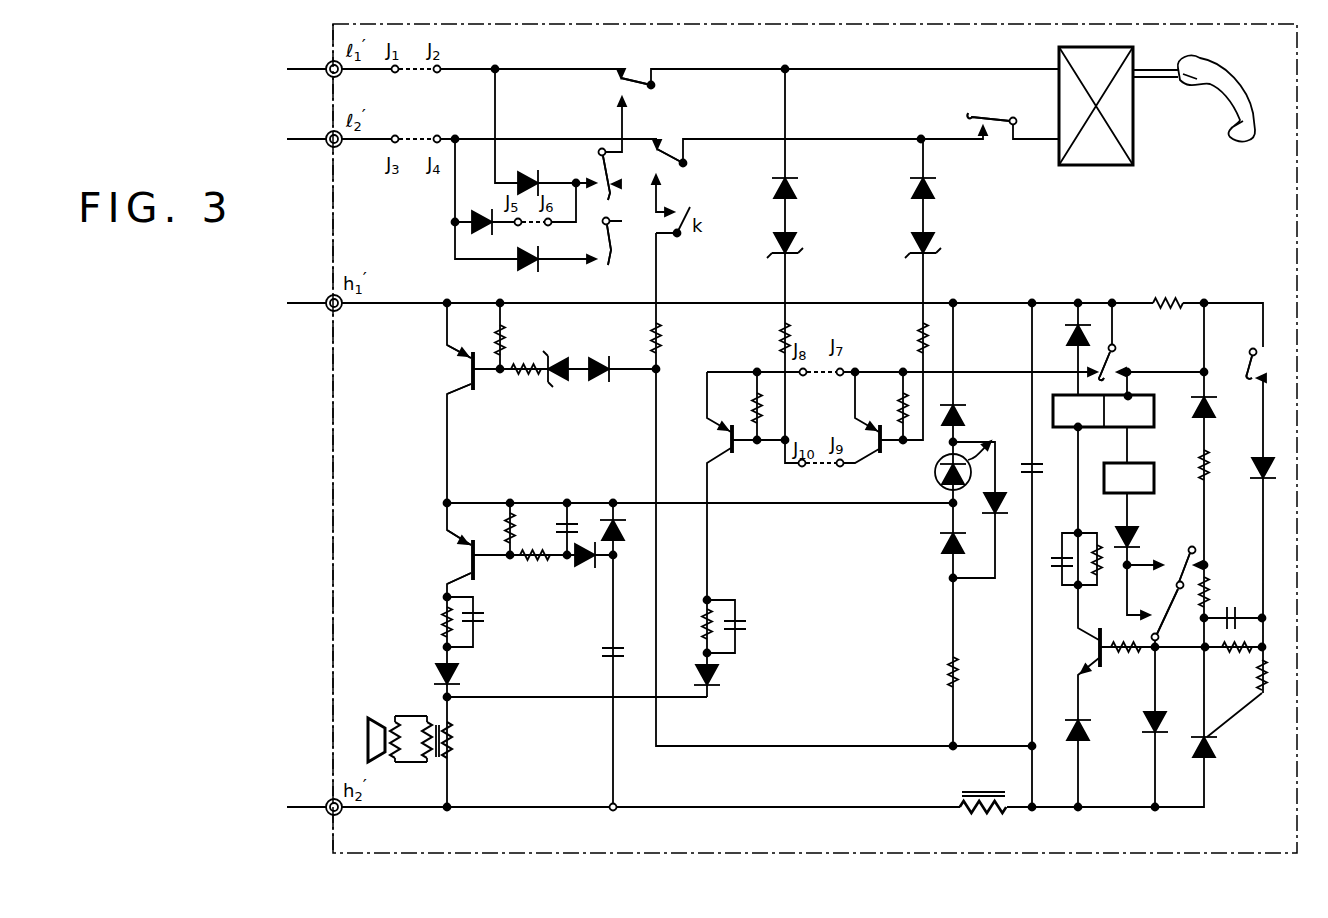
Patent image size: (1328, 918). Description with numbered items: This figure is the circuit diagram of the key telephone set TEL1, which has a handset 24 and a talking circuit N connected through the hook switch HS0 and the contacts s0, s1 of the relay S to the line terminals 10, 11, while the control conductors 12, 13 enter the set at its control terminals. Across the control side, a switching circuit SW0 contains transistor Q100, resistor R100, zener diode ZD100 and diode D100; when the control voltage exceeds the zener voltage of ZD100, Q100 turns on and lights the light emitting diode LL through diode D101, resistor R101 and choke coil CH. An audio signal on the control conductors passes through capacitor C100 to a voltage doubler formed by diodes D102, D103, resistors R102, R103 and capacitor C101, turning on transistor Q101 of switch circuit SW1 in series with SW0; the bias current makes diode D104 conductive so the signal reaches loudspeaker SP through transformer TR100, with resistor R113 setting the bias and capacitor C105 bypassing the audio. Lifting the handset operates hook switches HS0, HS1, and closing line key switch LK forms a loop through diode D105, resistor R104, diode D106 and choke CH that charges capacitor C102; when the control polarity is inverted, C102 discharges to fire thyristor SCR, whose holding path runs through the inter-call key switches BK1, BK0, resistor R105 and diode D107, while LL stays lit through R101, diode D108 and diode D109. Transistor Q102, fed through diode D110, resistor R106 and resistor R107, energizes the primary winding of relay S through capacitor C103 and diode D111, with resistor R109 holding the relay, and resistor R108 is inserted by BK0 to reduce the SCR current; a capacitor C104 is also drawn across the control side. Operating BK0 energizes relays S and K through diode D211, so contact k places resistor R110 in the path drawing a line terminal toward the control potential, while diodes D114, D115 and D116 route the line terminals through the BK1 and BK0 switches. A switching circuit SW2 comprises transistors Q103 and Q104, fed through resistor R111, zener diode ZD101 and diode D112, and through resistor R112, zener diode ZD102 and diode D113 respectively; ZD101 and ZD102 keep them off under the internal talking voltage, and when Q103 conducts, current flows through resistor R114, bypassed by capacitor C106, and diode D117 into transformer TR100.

The line terminal l1' 10 is at (316, 72).
The line terminal l2' 11 is at (316, 142).
The control conductor 12 is at (314, 307).
The control conductor 13 is at (315, 804).
The handset 24 is at (1196, 91).
The talking circuit N is at (1108, 106).
The contact of relay S s0 is at (635, 58).
The contact of relay S s1 is at (670, 139).
The hook switch HS0 is at (992, 104).
The hook switch HS1 is at (1126, 350).
The inter-call key switch BK0 is at (1180, 549).
The inter-call key switch BK1 is at (1155, 607).
The line key switch LK is at (1266, 366).
The relay K is at (1140, 479).
The relay S is at (1103, 399).
The light emitting diode LL is at (952, 464).
The thyristor SCR is at (1226, 751).
The loudspeaker SP is at (379, 723).
The transformer TR100 is at (454, 739).
The choke coil CH is at (983, 790).
The key telephone set TEL1 is at (333, 508).
The switching circuit SW0 is at (437, 385).
The switch circuit SW1 is at (437, 565).
The switching circuit SW2 is at (852, 495).
The transistor Q100 is at (500, 376).
The transistor Q101 is at (500, 563).
The transistor Q102 is at (1070, 647).
The transistor Q103 is at (698, 440).
The transistor Q104 is at (880, 423).
The resistor R100 is at (526, 340).
The resistor R101 is at (981, 672).
The resistor R102 is at (539, 544).
The resistor R103 is at (488, 524).
The resistor R104 is at (1240, 666).
The resistor R105 is at (1226, 465).
The resistor R106 is at (1129, 661).
The resistor R107 is at (1169, 291).
The resistor R108 is at (1227, 579).
The resistor R109 is at (1104, 544).
The resistor R110 is at (681, 338).
The resistor R111 is at (759, 338).
The resistor R112 is at (896, 336).
The resistor R113 is at (424, 622).
The resistor R114 is at (684, 624).
The capacitor C100 is at (588, 650).
The capacitor C101 is at (557, 520).
The capacitor C102 is at (1212, 570).
The capacitor C103 is at (1048, 545).
The capacitor C104 is at (1051, 454).
The capacitor C105 is at (502, 624).
The capacitor C106 is at (762, 623).
The diode D100 is at (602, 380).
The diode D101 is at (1013, 517).
The diode D102 is at (627, 516).
The diode D103 is at (584, 561).
The diode D104 is at (461, 673).
The diode D105 is at (1254, 477).
The diode D106 is at (1173, 710).
The diode D107 is at (1223, 416).
The diode D108 is at (927, 549).
The diode D109 is at (980, 413).
The diode D110 is at (1101, 732).
The diode D111 is at (1063, 329).
The diode D112 is at (811, 189).
The diode D113 is at (950, 189).
The diode D114 is at (535, 171).
The diode D115 is at (484, 210).
The diode D116 is at (532, 250).
The diode D117 is at (731, 678).
The diode D211 is at (1146, 524).
The zener diode ZD100 is at (550, 376).
The zener diode ZD101 is at (814, 245).
The zener diode ZD102 is at (953, 245).